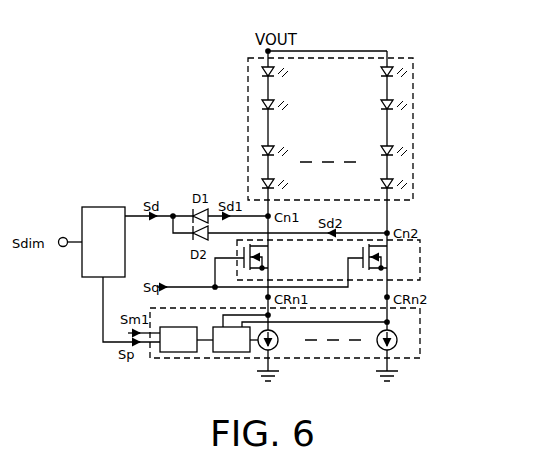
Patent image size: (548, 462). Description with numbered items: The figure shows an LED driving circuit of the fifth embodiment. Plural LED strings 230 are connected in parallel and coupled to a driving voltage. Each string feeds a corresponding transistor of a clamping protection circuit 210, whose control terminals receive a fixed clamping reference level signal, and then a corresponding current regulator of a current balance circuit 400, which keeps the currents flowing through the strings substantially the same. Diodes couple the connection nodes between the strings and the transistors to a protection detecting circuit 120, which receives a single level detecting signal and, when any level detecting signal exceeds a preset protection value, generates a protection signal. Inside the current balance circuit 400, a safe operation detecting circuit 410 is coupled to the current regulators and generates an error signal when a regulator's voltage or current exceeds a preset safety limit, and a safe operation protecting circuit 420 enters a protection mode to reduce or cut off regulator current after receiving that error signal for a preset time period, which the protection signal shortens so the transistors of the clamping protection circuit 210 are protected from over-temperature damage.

The protection detecting circuit 120 is at (116, 250).
The LED strings 230 is at (413, 128).
The clamping protection circuit 210 is at (420, 247).
The current balance circuit 400 is at (309, 329).
The safe operation detecting circuit 410 is at (244, 348).
The safe operation protecting circuit 420 is at (191, 348).